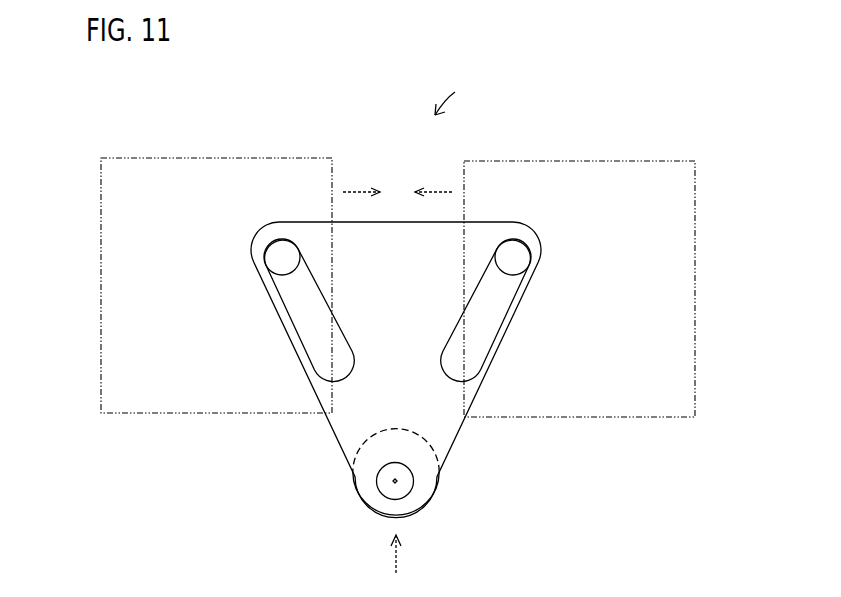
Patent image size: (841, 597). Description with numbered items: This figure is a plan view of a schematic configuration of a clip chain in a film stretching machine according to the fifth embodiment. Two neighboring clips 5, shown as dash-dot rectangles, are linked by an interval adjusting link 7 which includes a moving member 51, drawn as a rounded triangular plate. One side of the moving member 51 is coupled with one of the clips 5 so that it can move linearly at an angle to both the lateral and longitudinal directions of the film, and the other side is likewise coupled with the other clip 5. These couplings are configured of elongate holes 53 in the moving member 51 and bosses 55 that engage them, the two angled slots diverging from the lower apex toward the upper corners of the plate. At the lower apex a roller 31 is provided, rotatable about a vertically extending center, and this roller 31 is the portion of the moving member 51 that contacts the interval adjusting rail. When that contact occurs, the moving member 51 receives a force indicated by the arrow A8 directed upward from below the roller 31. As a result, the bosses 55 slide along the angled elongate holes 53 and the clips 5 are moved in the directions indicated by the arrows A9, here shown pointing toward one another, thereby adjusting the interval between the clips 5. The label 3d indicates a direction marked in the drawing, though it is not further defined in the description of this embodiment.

The direction 3d is at (458, 97).
The clip 5 is at (100, 262).
The interval adjusting link 7 is at (403, 371).
The roller 31 is at (438, 497).
The moving member 51 is at (332, 428).
The elongate hole 53 is at (302, 317).
The boss 55 is at (278, 259).
The arrow A8 is at (398, 555).
The arrows A9 is at (358, 191).